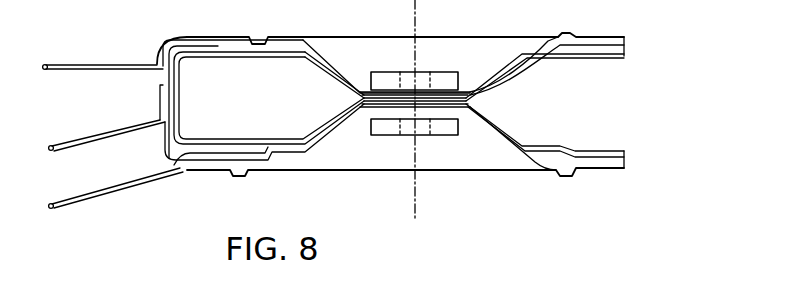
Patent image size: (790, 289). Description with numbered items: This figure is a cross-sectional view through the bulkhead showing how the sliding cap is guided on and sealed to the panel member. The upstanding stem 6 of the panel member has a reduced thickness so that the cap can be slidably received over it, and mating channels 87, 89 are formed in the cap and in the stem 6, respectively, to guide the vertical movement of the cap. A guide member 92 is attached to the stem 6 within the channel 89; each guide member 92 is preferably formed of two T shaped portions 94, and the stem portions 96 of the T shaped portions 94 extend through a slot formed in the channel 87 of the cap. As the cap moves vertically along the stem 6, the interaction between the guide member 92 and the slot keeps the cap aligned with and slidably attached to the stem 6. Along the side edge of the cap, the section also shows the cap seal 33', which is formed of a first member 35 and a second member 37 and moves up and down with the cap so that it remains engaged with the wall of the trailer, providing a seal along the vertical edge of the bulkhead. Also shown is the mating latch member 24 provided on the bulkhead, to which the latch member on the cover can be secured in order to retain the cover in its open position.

The mating latch member 24 is at (97, 65).
The cap seal 33' is at (60, 111).
The second member 37 is at (108, 128).
The first member 35 is at (112, 185).
The stem 6 is at (272, 76).
The channel 87 is at (324, 48).
The guide member 92 is at (447, 56).
The T shaped portion 94 is at (384, 72).
The stem portion 96 is at (476, 103).
The channel 89 is at (486, 132).